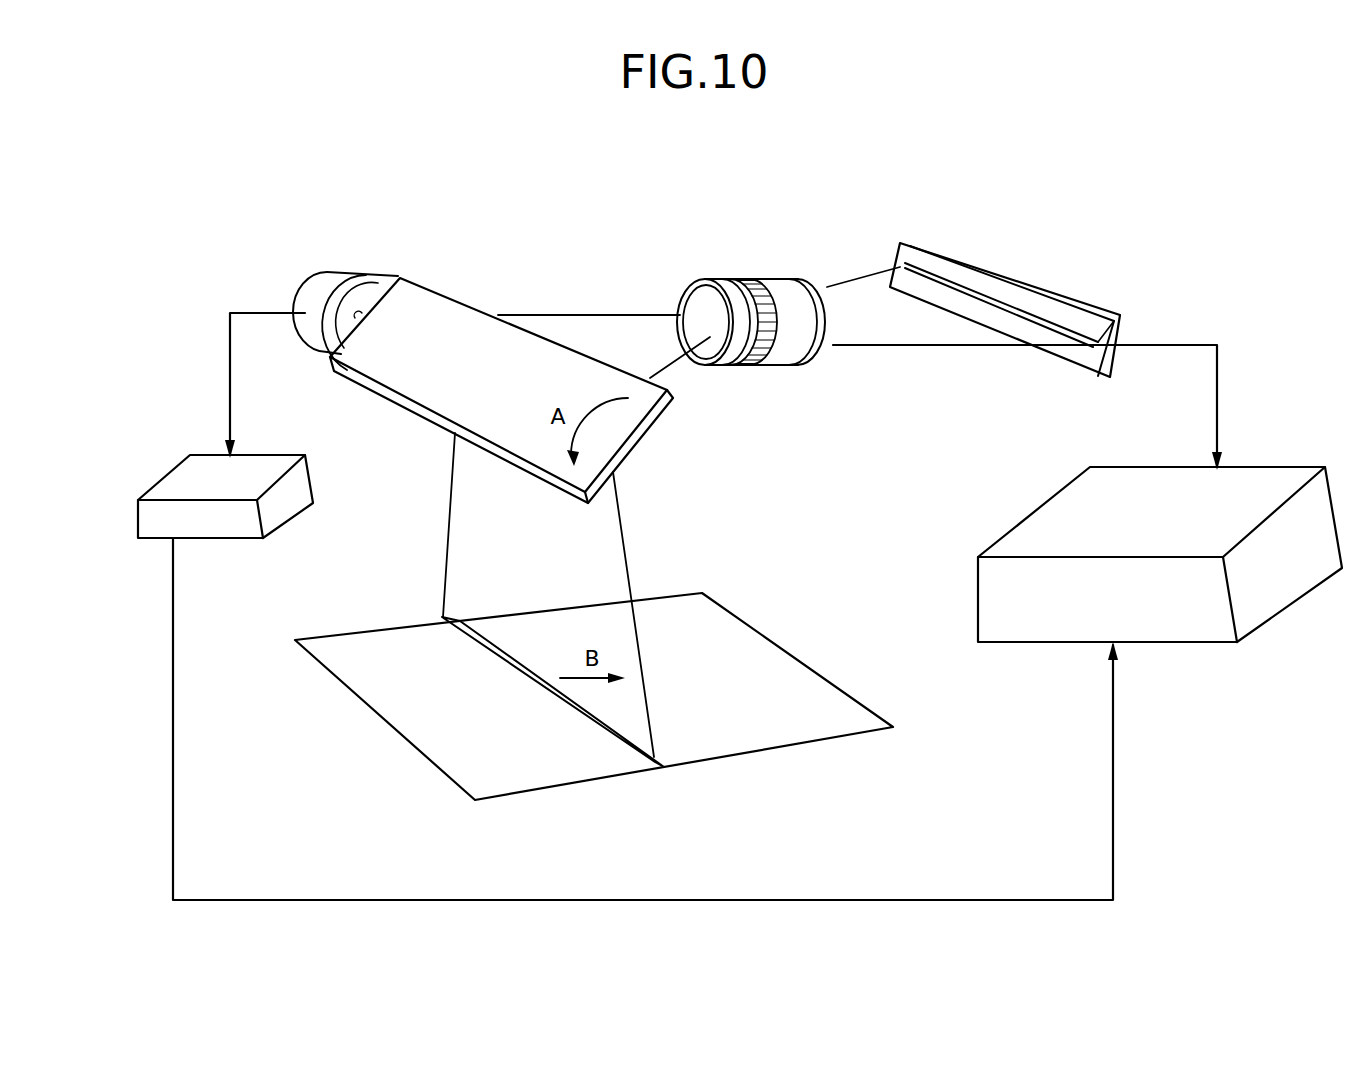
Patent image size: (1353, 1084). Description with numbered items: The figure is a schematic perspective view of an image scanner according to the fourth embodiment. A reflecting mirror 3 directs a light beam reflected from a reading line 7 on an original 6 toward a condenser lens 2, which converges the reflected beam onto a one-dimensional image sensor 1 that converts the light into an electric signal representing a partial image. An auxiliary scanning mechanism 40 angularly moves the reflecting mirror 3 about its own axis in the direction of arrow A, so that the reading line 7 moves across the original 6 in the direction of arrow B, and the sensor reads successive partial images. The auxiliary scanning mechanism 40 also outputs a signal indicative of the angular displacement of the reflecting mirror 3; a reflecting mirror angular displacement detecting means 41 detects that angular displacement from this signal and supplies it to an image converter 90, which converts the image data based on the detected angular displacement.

The one-dimensional image sensor 1 is at (1027, 283).
The condenser lens 2 is at (778, 278).
The reflecting mirror 3 is at (647, 420).
The original 6 is at (773, 648).
The reading line 7 is at (657, 767).
The auxiliary scanning mechanism 40 is at (323, 284).
The reflecting mirror angular displacement detecting means 41 is at (187, 490).
The image converter 90 is at (1023, 528).